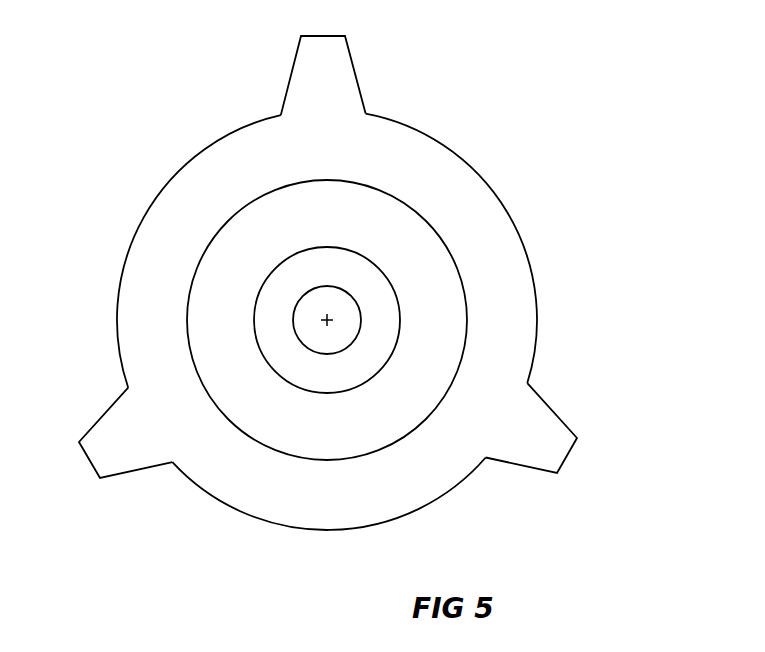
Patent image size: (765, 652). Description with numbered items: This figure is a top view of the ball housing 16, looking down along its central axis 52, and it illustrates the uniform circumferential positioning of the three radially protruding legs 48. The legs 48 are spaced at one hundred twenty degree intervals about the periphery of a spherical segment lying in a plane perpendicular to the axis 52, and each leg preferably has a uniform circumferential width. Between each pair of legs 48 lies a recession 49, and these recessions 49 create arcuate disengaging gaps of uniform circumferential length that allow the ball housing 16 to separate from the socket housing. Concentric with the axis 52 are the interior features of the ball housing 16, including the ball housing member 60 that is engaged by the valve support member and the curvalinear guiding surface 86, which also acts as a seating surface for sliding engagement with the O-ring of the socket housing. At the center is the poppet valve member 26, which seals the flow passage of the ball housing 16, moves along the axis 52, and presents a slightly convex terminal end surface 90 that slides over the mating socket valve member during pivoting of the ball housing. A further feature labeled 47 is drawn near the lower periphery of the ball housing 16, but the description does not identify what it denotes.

The ball housing 16 is at (572, 244).
The poppet valve member 26 is at (378, 338).
The outer periphery lower portion 47 is at (287, 540).
The legs 48 is at (348, 81).
The recessions 49 is at (151, 182).
The central axis 52 is at (335, 314).
The ball housing member 60 is at (251, 150).
The curvalinear guiding surface 86 is at (377, 215).
The terminal end surface 90 is at (298, 313).